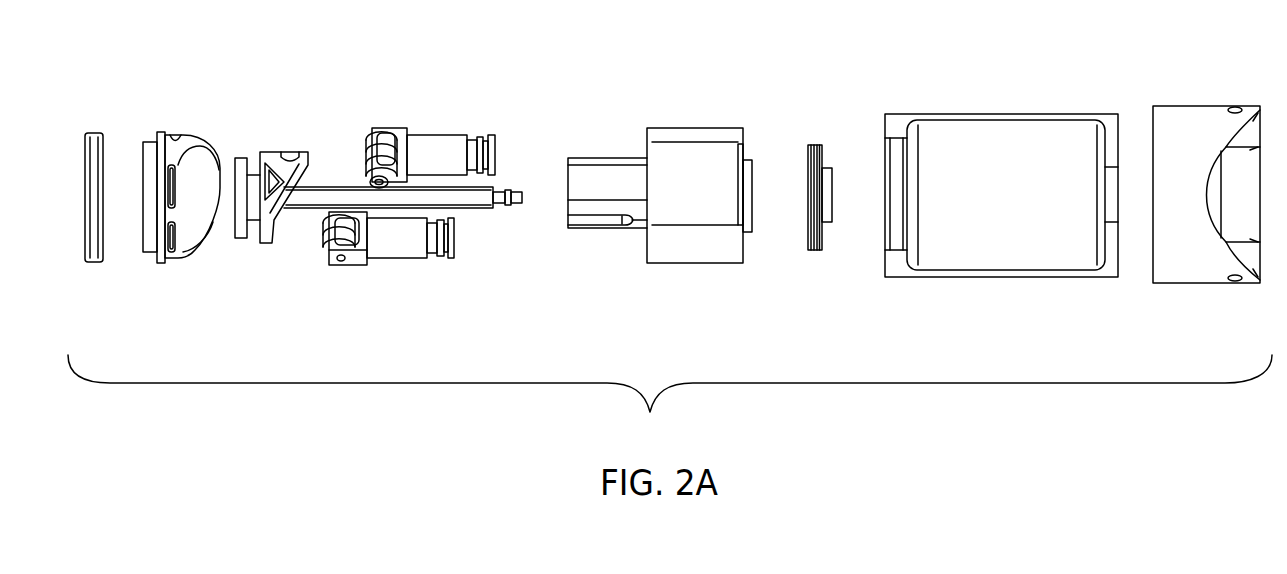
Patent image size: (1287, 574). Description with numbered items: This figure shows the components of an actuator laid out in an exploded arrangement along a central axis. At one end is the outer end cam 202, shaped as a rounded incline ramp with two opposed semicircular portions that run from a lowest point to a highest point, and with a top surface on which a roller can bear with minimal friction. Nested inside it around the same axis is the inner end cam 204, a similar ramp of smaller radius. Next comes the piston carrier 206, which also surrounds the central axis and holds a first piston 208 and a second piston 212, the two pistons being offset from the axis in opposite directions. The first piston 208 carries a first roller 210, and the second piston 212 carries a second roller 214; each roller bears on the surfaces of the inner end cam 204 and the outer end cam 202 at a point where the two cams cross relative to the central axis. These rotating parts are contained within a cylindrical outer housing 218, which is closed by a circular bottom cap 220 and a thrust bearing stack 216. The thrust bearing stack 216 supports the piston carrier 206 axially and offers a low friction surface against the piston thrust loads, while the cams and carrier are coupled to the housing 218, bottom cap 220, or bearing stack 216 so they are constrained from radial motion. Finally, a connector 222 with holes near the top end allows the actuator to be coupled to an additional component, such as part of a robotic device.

The outer end cam 202 is at (187, 138).
The inner end cam 204 is at (288, 153).
The piston carrier 206 is at (683, 128).
The first piston 208 is at (444, 135).
The first roller 210 is at (378, 128).
The second piston 212 is at (416, 258).
The second roller 214 is at (327, 256).
The thrust bearing stack 216 is at (811, 145).
The outer housing 218 is at (960, 113).
The bottom cap 220 is at (89, 132).
The connector 222 is at (1185, 112).